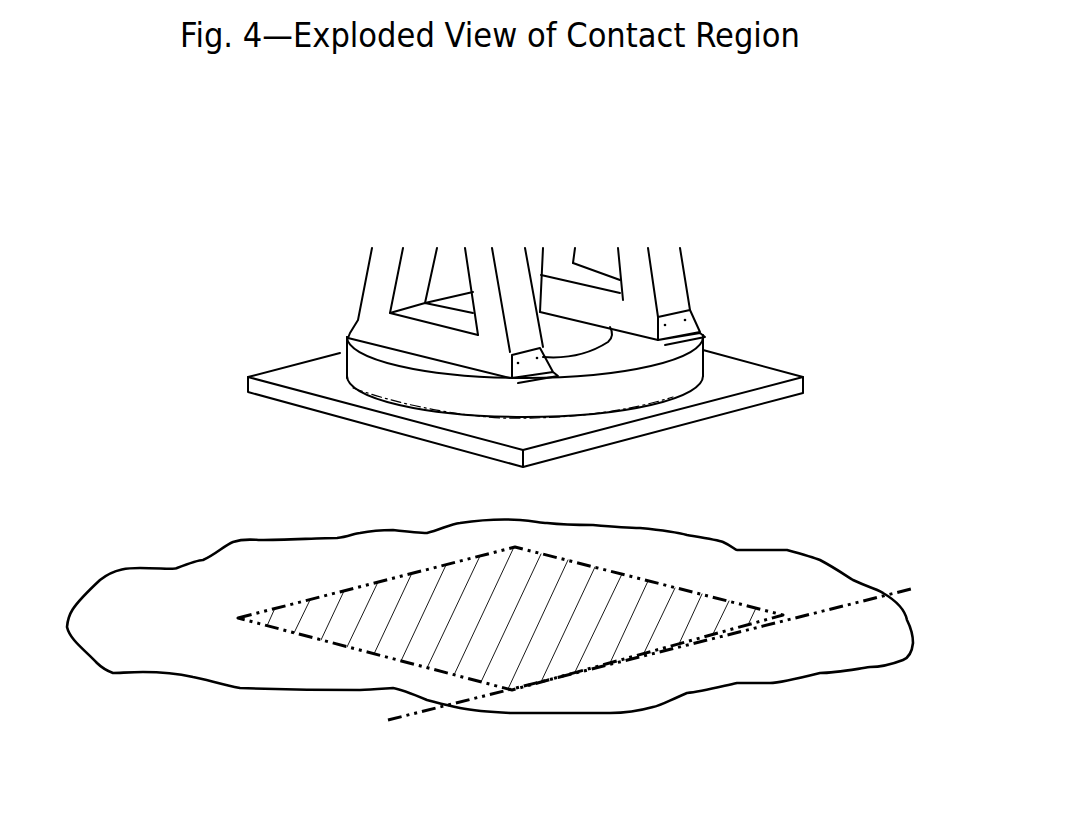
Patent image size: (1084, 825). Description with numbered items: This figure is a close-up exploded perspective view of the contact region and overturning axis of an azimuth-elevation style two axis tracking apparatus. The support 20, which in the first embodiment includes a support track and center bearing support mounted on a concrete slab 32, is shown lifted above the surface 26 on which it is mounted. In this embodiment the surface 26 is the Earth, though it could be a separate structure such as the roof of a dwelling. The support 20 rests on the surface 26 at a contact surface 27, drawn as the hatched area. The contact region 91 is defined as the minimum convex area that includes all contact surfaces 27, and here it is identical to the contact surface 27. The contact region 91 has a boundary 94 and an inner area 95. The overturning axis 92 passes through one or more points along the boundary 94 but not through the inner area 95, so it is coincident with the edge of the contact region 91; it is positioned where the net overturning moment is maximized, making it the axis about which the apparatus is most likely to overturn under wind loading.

The support 20 is at (355, 405).
The surface 26 is at (275, 668).
The contact surface 27 is at (553, 590).
The concrete slab 32 is at (317, 580).
The contact region 91 is at (613, 604).
The overturning axis 92 is at (900, 588).
The boundary 94 is at (705, 593).
The inner area 95 is at (333, 628).